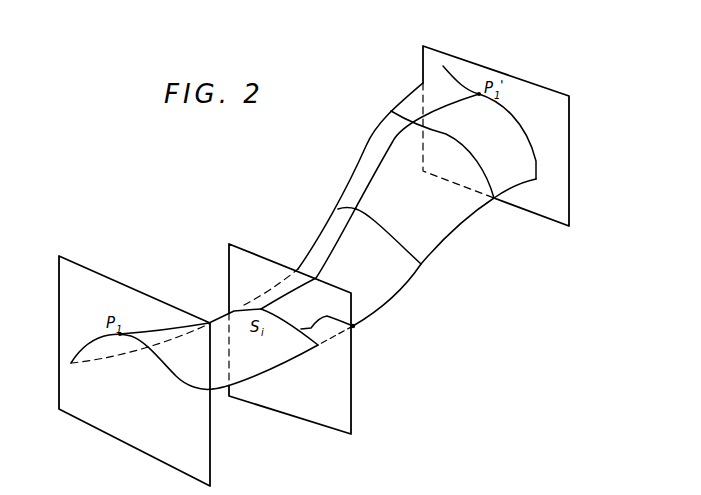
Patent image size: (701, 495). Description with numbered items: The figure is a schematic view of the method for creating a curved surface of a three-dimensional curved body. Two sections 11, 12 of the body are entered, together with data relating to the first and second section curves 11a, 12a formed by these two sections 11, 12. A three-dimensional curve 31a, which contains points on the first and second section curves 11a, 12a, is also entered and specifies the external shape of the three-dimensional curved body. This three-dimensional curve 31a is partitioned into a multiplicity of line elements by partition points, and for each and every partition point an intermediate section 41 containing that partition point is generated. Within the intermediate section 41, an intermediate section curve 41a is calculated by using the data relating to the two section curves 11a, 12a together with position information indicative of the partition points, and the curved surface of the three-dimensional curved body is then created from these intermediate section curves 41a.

The section 11 is at (88, 283).
The first section curve 11a is at (163, 381).
The section 12 is at (543, 102).
The second section curve 12a is at (535, 160).
The three-dimensional curve 31a is at (342, 235).
The intermediate section 41 is at (338, 393).
The intermediate section curve 41a is at (352, 325).